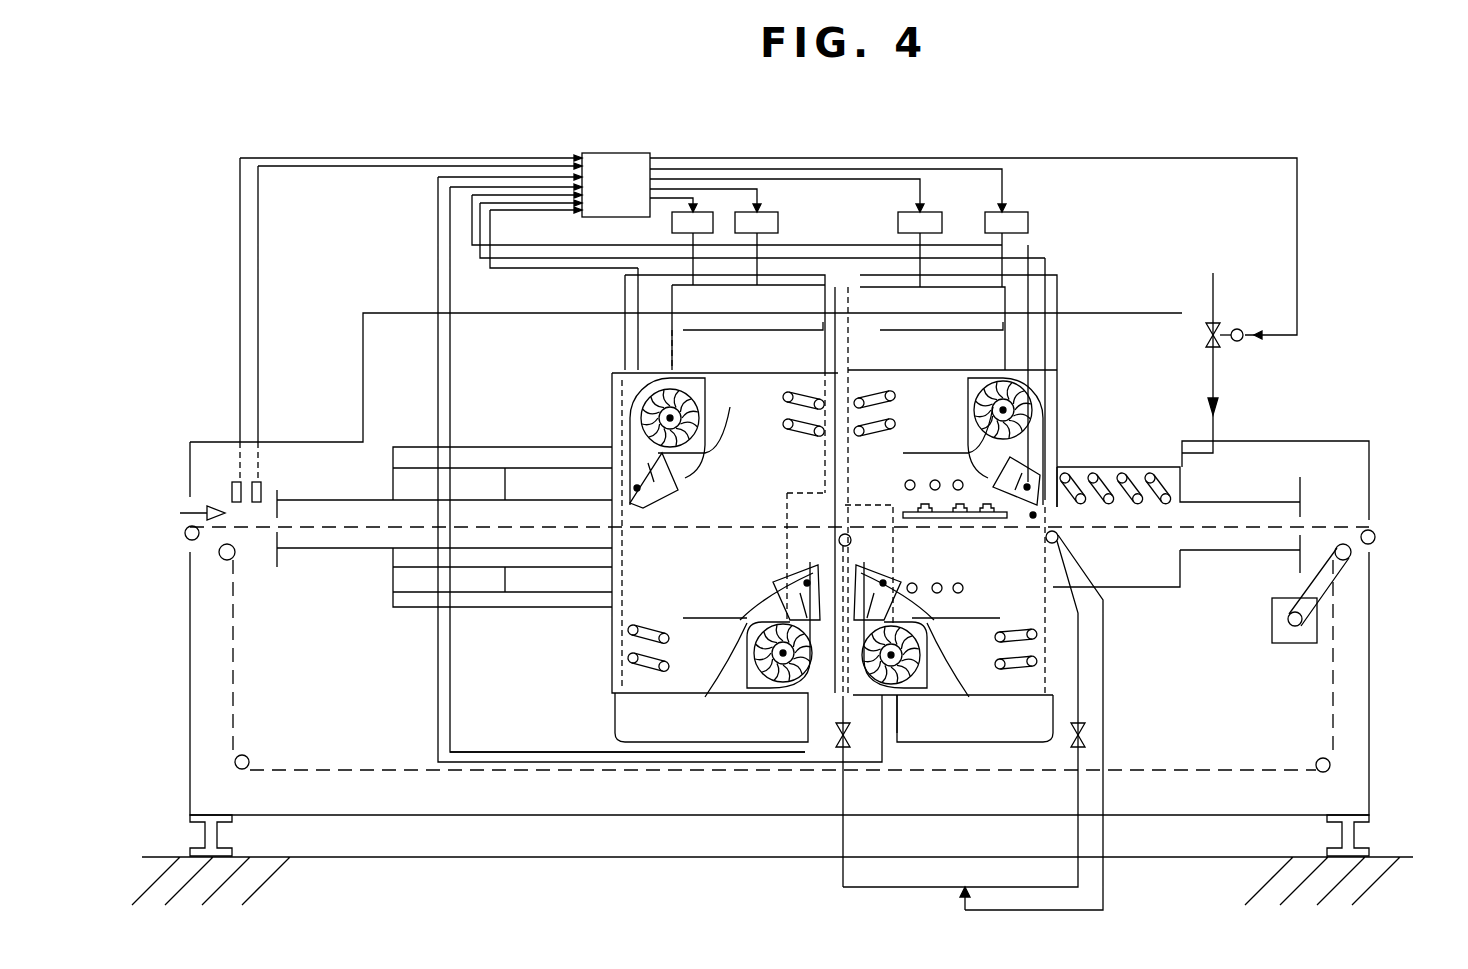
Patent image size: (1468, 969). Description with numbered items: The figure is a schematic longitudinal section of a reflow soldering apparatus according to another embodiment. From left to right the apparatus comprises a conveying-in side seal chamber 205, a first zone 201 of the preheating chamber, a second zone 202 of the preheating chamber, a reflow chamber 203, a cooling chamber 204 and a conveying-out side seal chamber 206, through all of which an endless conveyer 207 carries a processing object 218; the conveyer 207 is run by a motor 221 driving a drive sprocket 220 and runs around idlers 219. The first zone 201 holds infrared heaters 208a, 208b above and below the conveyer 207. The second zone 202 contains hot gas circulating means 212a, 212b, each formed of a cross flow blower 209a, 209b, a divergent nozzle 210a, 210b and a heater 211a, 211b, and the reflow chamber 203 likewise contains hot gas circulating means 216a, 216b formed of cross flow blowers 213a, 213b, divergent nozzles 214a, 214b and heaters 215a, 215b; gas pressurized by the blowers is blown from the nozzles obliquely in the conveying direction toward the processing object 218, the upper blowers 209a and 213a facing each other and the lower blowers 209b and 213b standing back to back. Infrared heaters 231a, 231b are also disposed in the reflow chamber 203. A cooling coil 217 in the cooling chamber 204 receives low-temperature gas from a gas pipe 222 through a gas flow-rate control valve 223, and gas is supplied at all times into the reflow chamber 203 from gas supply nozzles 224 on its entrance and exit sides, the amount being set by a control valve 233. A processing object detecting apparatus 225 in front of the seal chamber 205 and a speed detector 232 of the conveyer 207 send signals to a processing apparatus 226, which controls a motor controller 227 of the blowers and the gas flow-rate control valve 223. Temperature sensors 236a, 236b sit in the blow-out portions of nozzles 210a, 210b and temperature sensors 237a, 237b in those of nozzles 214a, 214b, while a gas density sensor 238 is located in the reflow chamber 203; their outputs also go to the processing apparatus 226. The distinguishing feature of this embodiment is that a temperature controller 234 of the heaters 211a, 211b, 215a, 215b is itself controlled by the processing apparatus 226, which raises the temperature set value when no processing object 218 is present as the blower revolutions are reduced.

The first zone of the preheating chamber 201 is at (478, 450).
The second zone of the preheating chamber 202 is at (614, 373).
The reflow chamber 203 is at (1058, 373).
The cooling chamber 204 is at (1114, 467).
The conveying-in side seal chamber 205 is at (294, 500).
The conveying-out side seal chamber 206 is at (1272, 500).
The conveyer 207 is at (325, 548).
The infrared heater 208a is at (547, 478).
The infrared heater 208b is at (476, 590).
The cross flow blower 209a is at (694, 378).
The cross flow blower 209b is at (768, 690).
The divergent nozzle 210a is at (724, 436).
The divergent nozzle 210b is at (742, 625).
The heater 211a is at (803, 393).
The heater 211b is at (648, 680).
The hot gas circulating means 212a is at (752, 330).
The hot gas circulating means 212b is at (697, 743).
The cross flow blower 213a is at (988, 380).
The cross flow blower 213b is at (905, 680).
The divergent nozzle 214a is at (973, 453).
The divergent nozzle 214b is at (950, 678).
The heater 215a is at (880, 393).
The heater 215b is at (1020, 668).
The hot gas circulating means 216a is at (957, 330).
The hot gas circulating means 216b is at (970, 743).
The cooling coil 217 is at (1170, 465).
The processing object 218 is at (995, 520).
The idler 219 is at (222, 562).
The drive sprocket 220 is at (1350, 560).
The motor 221 is at (1295, 645).
The gas pipe 222 is at (1218, 383).
The gas flow-rate control valve 223 is at (1222, 322).
The gas supply nozzle 224 is at (840, 538).
The processing object detecting apparatus 225 is at (262, 482).
The processing apparatus 226 is at (609, 153).
The motor controller 227 is at (897, 222).
The infrared heater 231a is at (905, 485).
The infrared heater 231b is at (962, 590).
The speed detector 232 is at (232, 492).
The control valve 233 is at (852, 745).
The temperature controller 234 is at (714, 212).
The temperature sensor 236a is at (637, 490).
The temperature sensor 236b is at (790, 580).
The temperature sensor 237a is at (1030, 480).
The temperature sensor 237b is at (897, 575).
The gas density sensor 238 is at (1036, 515).